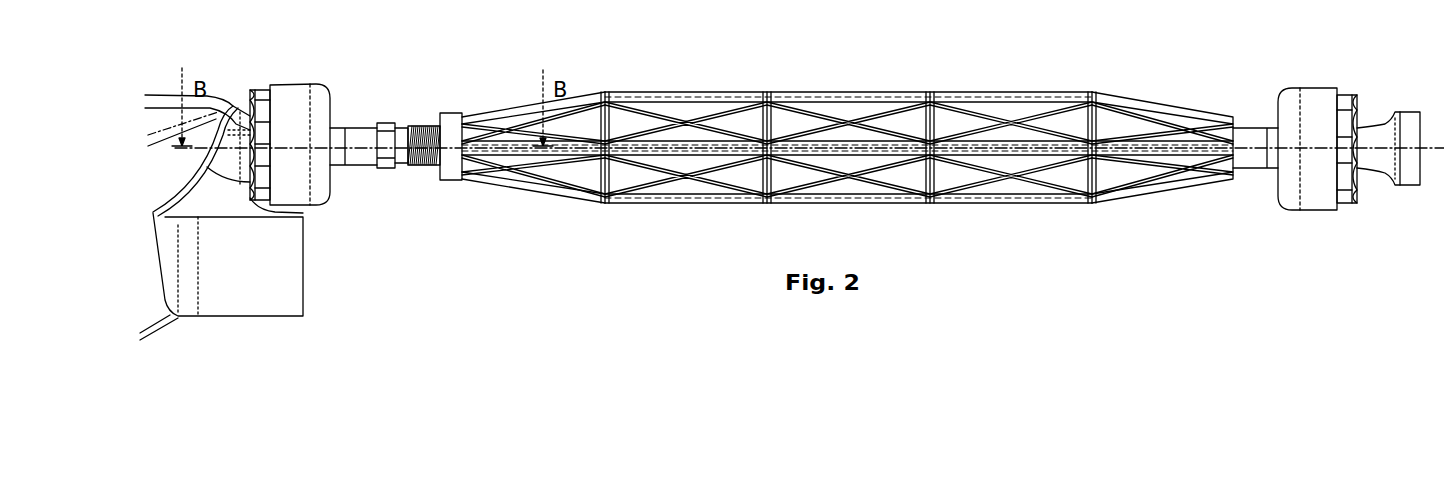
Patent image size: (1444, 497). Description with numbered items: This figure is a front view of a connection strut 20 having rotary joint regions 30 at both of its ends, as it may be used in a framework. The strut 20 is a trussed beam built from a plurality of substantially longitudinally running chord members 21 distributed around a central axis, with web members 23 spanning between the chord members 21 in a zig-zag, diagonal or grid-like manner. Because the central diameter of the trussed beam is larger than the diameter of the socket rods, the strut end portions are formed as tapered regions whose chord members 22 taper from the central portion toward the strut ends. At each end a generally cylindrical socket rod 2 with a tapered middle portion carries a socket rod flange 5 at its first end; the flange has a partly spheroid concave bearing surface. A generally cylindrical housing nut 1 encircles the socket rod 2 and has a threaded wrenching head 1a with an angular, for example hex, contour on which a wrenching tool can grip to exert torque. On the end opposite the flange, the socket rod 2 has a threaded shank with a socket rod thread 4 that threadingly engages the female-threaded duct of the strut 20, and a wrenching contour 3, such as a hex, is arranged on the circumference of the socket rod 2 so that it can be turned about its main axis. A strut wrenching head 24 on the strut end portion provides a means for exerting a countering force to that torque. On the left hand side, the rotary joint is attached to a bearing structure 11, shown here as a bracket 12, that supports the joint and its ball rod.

The housing nut 1 is at (298, 84).
The threaded wrenching head 1a is at (258, 90).
The socket rod 2 is at (355, 170).
The wrenching contour 3 is at (383, 122).
The socket rod thread 4 is at (418, 126).
The socket rod flange 5 is at (1402, 186).
The bearing structure 11 is at (228, 100).
The bracket 12 is at (297, 290).
The strut 20 is at (812, 78).
The chord members 21 is at (742, 98).
The tapering chord members 22 is at (500, 108).
The web members 23 is at (660, 118).
The strut wrenching head 24 is at (455, 116).
The rotary joint region 30 is at (340, 75).